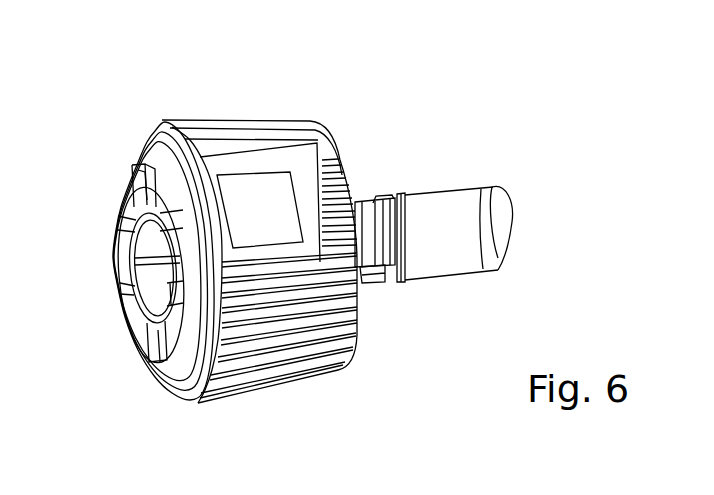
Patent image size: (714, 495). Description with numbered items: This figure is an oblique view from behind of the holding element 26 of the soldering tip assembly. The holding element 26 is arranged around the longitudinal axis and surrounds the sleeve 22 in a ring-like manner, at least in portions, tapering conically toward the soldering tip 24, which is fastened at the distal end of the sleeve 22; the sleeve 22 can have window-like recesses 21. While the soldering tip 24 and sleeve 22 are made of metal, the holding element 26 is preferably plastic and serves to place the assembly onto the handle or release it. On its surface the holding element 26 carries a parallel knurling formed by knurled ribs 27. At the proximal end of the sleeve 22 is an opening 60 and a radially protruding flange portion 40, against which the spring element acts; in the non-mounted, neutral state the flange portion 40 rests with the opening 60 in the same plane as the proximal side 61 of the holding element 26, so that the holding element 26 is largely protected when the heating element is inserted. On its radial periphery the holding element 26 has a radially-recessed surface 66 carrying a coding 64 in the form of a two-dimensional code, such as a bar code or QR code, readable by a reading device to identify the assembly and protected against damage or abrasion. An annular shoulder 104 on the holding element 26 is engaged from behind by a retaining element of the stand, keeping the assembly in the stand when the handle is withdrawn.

The annular shoulder 104 is at (162, 124).
The proximal side 61 is at (165, 190).
The holding element 26 is at (232, 130).
The radially-recessed surface 66 is at (283, 172).
The coding 64 is at (280, 192).
The window-like recesses 21 is at (385, 240).
The flange portion 40 is at (140, 217).
The opening 60 is at (153, 290).
The sleeve 22 is at (383, 277).
The soldering tip 24 is at (495, 262).
The knurled ribs 27 is at (323, 288).